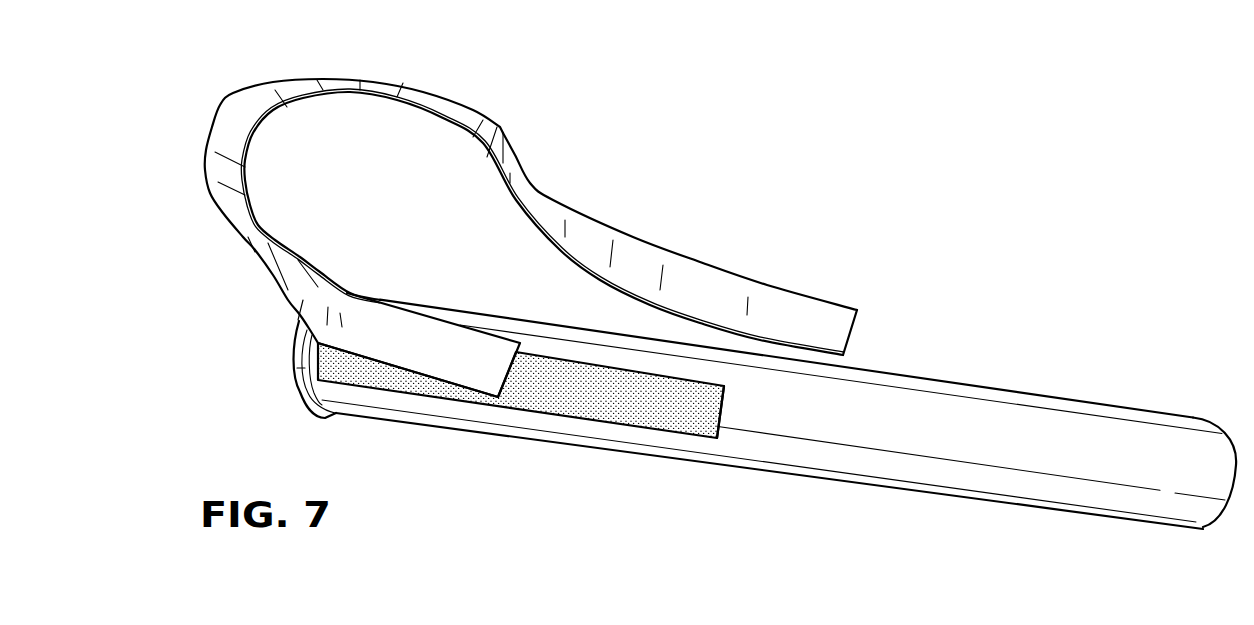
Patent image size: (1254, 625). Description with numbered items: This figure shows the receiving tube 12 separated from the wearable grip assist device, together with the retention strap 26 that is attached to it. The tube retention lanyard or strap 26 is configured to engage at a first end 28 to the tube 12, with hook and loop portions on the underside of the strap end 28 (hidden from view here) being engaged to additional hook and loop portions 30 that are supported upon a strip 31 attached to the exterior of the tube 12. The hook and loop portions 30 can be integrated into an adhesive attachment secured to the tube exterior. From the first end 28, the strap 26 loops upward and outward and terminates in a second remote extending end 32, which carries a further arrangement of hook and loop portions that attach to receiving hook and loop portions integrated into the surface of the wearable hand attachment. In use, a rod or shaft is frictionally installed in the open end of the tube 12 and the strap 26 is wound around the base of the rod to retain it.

The receiving tube 12 is at (633, 527).
The retention strap 26 is at (347, 83).
The first end 28 is at (436, 337).
The hook and loop portions 30 is at (573, 417).
The strip 31 is at (723, 412).
The second remote extending end 32 is at (830, 318).